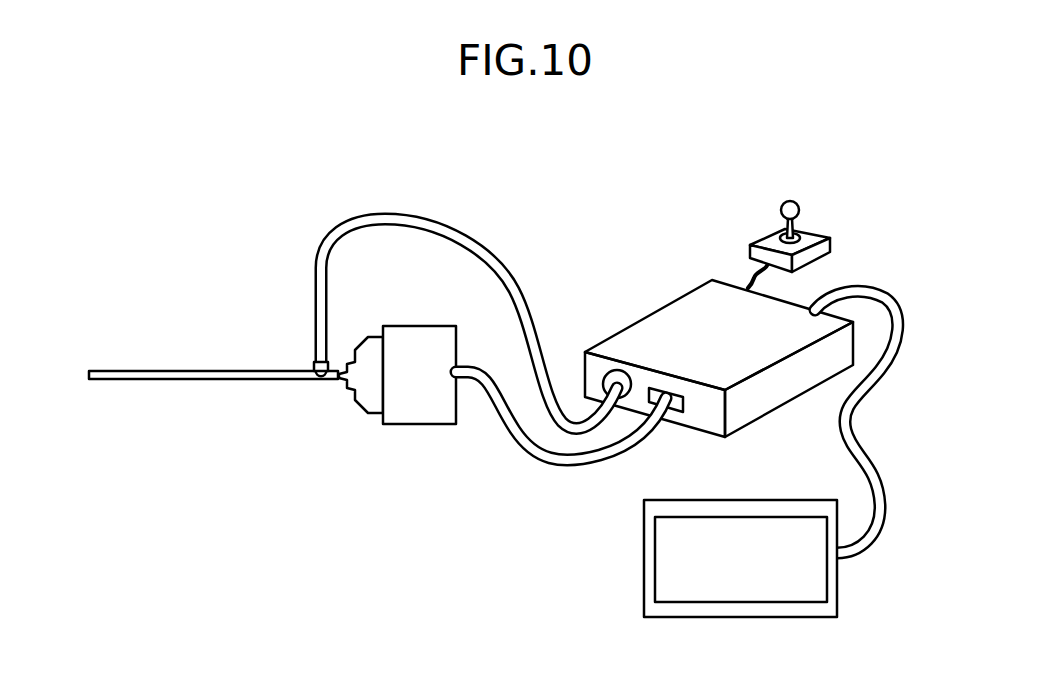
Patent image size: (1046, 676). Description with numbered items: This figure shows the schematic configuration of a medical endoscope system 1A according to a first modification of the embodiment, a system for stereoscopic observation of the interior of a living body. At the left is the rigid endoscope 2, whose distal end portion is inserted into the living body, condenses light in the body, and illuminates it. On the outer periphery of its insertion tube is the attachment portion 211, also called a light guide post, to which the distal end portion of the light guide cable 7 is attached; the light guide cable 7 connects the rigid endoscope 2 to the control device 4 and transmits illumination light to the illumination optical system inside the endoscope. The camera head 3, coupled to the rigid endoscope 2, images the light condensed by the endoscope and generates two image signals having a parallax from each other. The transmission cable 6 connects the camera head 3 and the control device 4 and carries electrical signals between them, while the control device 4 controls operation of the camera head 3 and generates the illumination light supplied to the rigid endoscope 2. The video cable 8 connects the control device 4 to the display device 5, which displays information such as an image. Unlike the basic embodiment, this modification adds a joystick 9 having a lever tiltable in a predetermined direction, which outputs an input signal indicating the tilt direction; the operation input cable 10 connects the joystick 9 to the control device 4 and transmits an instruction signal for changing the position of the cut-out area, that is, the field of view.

The medical endoscope system 1A is at (576, 224).
The rigid endoscope 2 is at (188, 371).
The attachment portion 211 is at (314, 364).
The camera head 3 is at (421, 326).
The control device 4 is at (672, 318).
The display device 5 is at (837, 597).
The transmission cable 6 is at (553, 468).
The light guide cable 7 is at (430, 220).
The video cable 8 is at (860, 406).
The joystick 9 is at (817, 228).
The operation input cable 10 is at (748, 285).